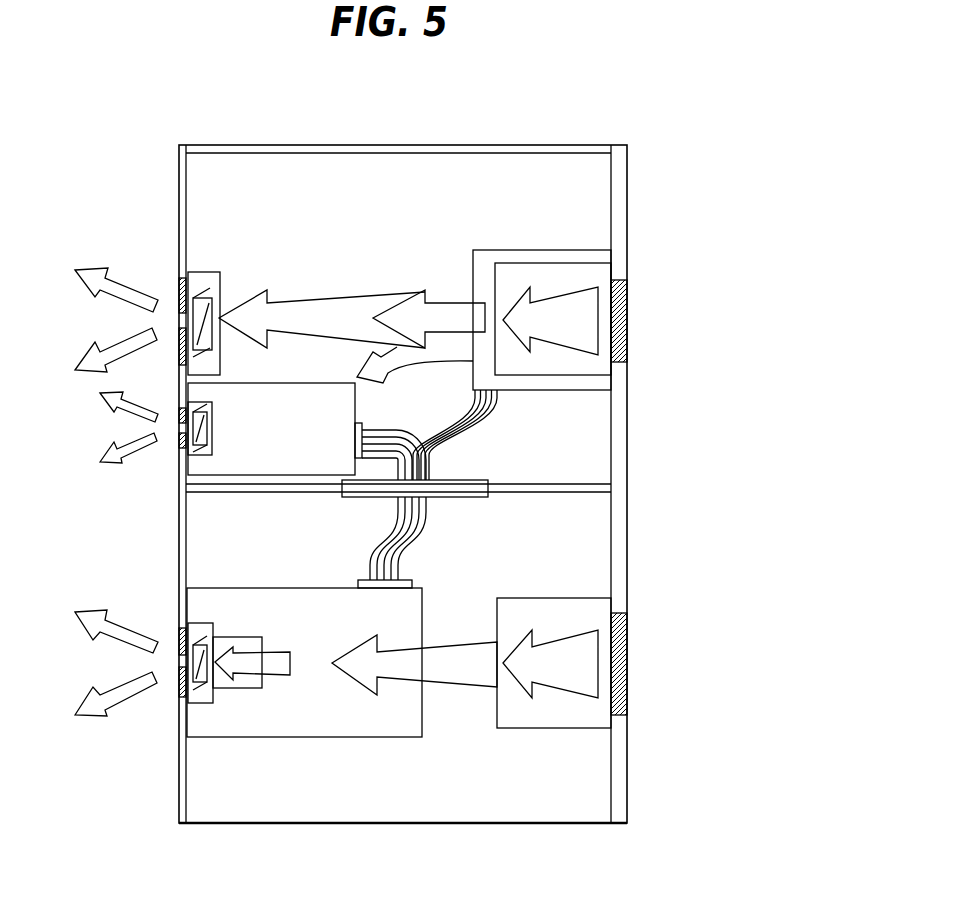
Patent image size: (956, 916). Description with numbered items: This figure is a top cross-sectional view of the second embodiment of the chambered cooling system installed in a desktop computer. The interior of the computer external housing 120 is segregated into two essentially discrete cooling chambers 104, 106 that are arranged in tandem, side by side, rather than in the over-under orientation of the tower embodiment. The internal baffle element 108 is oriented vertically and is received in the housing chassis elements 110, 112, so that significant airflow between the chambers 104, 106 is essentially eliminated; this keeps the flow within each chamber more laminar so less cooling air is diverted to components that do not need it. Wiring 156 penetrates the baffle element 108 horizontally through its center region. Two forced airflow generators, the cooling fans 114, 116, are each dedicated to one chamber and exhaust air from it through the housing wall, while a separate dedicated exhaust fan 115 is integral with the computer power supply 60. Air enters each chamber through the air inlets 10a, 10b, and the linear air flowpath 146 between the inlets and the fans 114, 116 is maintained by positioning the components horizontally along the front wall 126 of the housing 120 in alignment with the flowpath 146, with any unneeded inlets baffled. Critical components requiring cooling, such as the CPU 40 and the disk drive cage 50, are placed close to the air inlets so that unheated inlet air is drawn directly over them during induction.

The computer external housing 120 is at (492, 145).
The first chamber 104 is at (575, 205).
The air flowpath 146 is at (565, 292).
The forced airflow generator 114 is at (204, 273).
The dedicated cooling exhaust fan 115 is at (212, 428).
The forced airflow generator 116 is at (198, 632).
The air inlet 10a is at (627, 310).
The air inlet 10b is at (625, 667).
The front wall 126 is at (627, 423).
The baffle element 108 is at (467, 477).
The chassis element 112 is at (602, 488).
The wiring 156 is at (422, 538).
The chassis element 110 is at (197, 488).
The computer power supply 60 is at (258, 475).
The second chamber 106 is at (575, 548).
The CPU 40 is at (245, 690).
The disk drive cage 50 is at (522, 728).